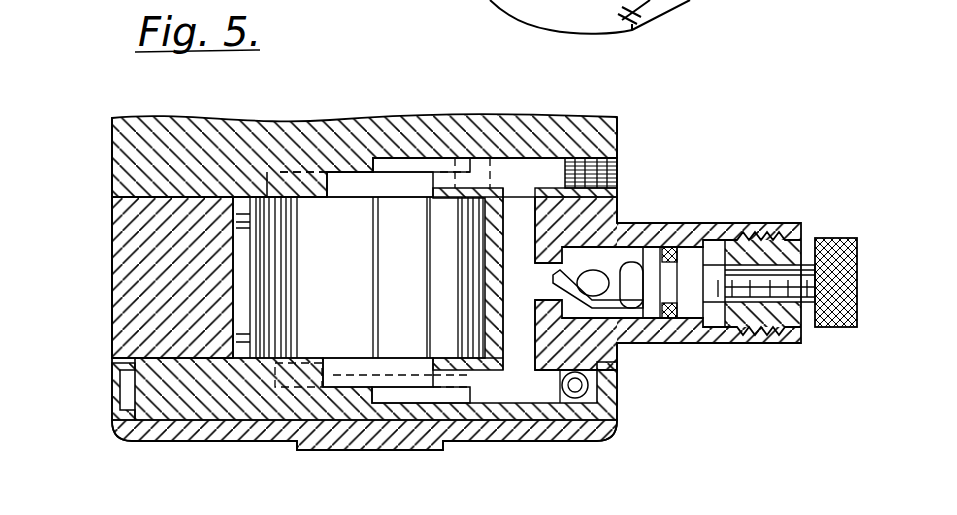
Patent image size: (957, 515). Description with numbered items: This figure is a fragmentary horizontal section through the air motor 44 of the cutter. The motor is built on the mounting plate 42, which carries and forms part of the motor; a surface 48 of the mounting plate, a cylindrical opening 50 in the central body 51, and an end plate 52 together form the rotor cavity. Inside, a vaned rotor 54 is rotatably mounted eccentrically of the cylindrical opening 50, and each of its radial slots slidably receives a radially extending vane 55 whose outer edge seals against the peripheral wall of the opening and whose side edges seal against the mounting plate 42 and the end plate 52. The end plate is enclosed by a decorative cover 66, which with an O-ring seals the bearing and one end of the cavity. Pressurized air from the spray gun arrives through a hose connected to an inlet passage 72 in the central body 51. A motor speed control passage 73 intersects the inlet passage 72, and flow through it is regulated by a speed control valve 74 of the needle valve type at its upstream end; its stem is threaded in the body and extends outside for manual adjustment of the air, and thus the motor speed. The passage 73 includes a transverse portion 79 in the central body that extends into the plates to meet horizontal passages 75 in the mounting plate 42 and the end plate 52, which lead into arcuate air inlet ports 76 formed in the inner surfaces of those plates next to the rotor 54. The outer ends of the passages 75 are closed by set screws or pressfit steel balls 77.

The mounting plate 42 is at (100, 146).
The air motor 44 is at (100, 328).
The surface of the mounting plate 48 is at (284, 194).
The cylindrical opening 50 is at (240, 282).
The central body 51 is at (125, 246).
The end plate 52 is at (128, 394).
The vaned rotor 54 is at (345, 276).
The vane 55 is at (372, 222).
The decorative cover 66 is at (200, 442).
The inlet passage 72 is at (598, 278).
The motor speed control passage 73 is at (485, 286).
The speed control valve 74 is at (844, 228).
The horizontal passage 75 is at (412, 160).
The arcuate air inlet port 76 is at (354, 174).
The set screw or pressfit steel ball 77 is at (600, 170).
The transverse portion 79 is at (542, 266).